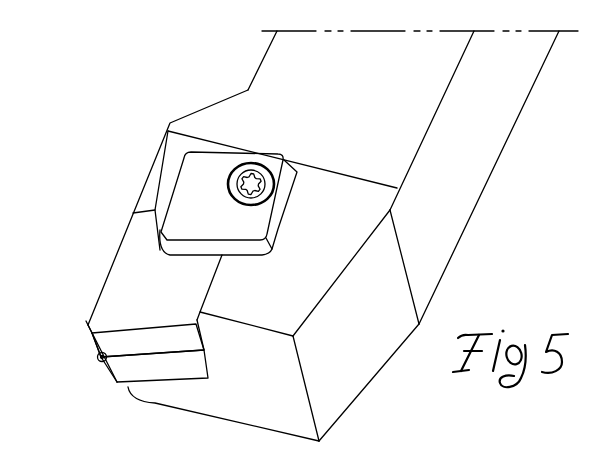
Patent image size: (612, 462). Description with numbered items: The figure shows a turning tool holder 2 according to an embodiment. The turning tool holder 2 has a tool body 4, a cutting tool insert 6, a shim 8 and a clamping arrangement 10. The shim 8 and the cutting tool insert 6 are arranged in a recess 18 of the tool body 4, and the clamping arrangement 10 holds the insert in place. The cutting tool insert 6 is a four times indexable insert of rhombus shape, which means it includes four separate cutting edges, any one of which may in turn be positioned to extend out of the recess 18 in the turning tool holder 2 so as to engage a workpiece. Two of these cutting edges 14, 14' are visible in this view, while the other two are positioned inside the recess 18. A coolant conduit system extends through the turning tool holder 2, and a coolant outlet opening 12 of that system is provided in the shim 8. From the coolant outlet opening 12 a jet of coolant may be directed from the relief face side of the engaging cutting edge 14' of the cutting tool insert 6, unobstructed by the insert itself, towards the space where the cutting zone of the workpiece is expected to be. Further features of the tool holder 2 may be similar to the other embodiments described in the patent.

The turning tool holder 2 is at (464, 269).
The tool body 4 is at (357, 378).
The cutting tool insert 6 is at (125, 264).
The shim 8 is at (165, 370).
The clamping arrangement 10 is at (187, 177).
The coolant outlet opening 12 is at (115, 381).
The cutting edge 14 is at (67, 347).
The cutting edge 14' is at (59, 307).
The recess 18 is at (202, 322).